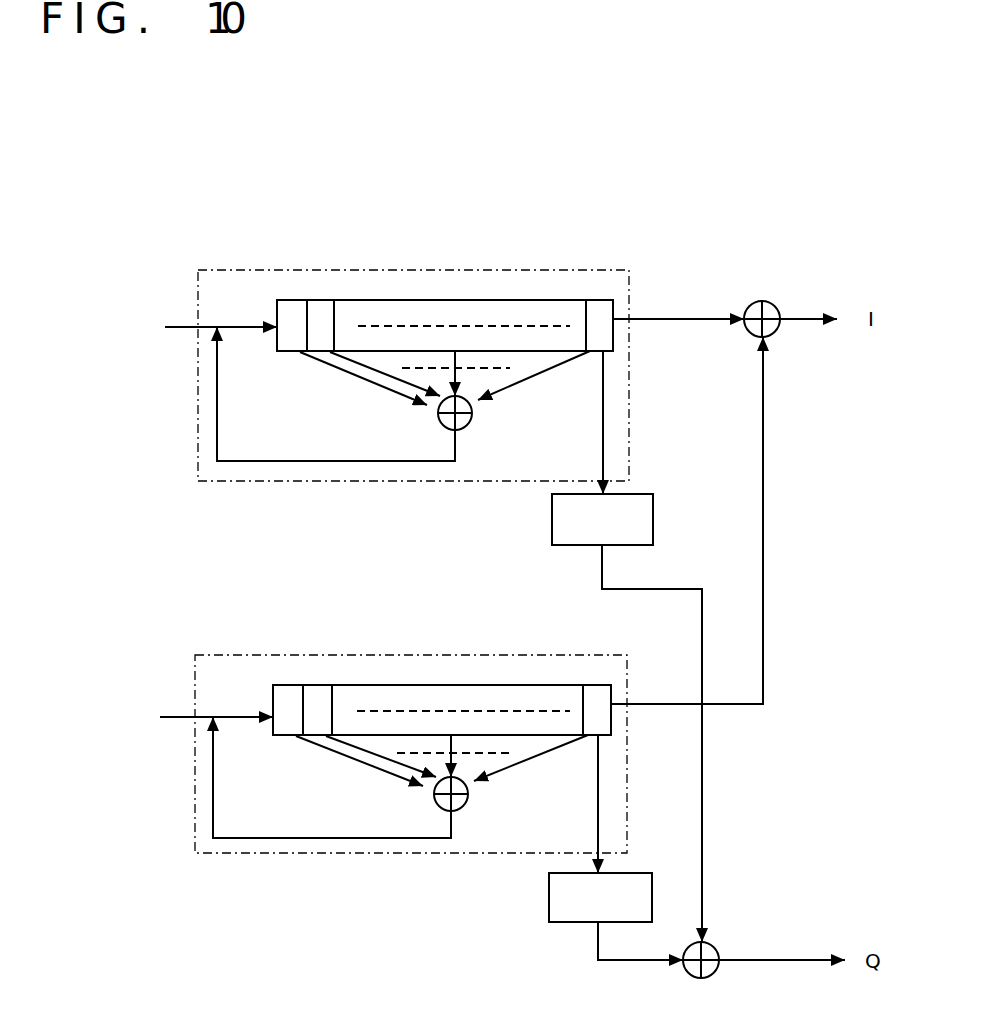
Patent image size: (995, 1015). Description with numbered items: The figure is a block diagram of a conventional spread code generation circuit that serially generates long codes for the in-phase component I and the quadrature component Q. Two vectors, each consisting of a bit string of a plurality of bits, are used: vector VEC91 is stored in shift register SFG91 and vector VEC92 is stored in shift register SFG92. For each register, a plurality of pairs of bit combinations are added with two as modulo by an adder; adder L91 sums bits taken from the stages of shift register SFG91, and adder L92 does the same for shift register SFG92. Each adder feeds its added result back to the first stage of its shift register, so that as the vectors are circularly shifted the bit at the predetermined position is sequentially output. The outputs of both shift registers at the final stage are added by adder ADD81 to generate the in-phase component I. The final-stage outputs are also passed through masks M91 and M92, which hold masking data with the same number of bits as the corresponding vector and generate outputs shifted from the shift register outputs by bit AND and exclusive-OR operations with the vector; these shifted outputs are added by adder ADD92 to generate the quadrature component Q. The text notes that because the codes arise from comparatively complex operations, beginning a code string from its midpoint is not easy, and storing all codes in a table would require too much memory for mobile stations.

The shift register SFG91 is at (392, 383).
The shift register SFG92 is at (391, 763).
The vector VEC91 is at (350, 333).
The vector VEC92 is at (345, 718).
The adder L91 is at (440, 423).
The adder L92 is at (438, 805).
The mask M91 is at (627, 646).
The mask M92 is at (616, 847).
The adder ADD81 is at (771, 300).
The adder ADD92 is at (713, 940).